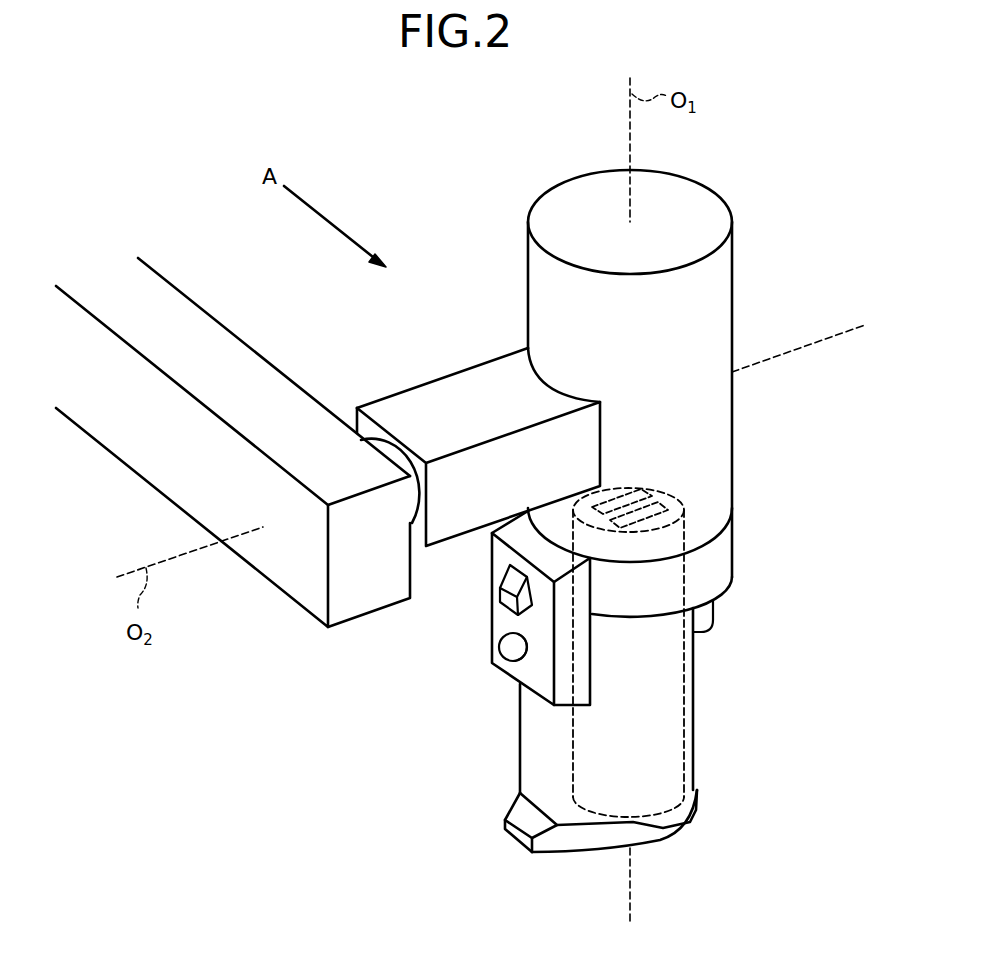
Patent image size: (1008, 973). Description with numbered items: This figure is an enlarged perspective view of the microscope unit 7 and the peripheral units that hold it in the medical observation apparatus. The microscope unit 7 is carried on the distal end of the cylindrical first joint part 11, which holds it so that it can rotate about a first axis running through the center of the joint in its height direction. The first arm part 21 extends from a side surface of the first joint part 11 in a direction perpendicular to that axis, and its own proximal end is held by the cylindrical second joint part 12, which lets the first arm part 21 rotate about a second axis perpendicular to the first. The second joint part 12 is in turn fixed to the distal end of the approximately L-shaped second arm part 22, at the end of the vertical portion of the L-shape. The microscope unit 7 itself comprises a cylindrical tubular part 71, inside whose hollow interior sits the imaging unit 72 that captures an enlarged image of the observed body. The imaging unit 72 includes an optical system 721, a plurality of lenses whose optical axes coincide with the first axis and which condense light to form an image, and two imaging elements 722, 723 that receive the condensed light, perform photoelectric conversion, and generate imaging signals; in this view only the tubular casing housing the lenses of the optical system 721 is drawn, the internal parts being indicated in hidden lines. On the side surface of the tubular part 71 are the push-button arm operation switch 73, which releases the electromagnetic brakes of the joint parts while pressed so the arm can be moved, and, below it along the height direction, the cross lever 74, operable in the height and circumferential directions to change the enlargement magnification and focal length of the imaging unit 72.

The first joint part 11 is at (708, 290).
The second joint part 12 is at (395, 457).
The first arm part 21 is at (478, 380).
The second arm part 22 is at (142, 458).
The microscope unit 7 is at (692, 668).
The tubular part 71 is at (693, 723).
The imaging unit 72 is at (716, 637).
The optical system 721 is at (685, 575).
The imaging element 722 is at (683, 502).
The imaging element 723 is at (648, 492).
The arm operation switch 73 is at (502, 587).
The cross lever 74 is at (505, 646).